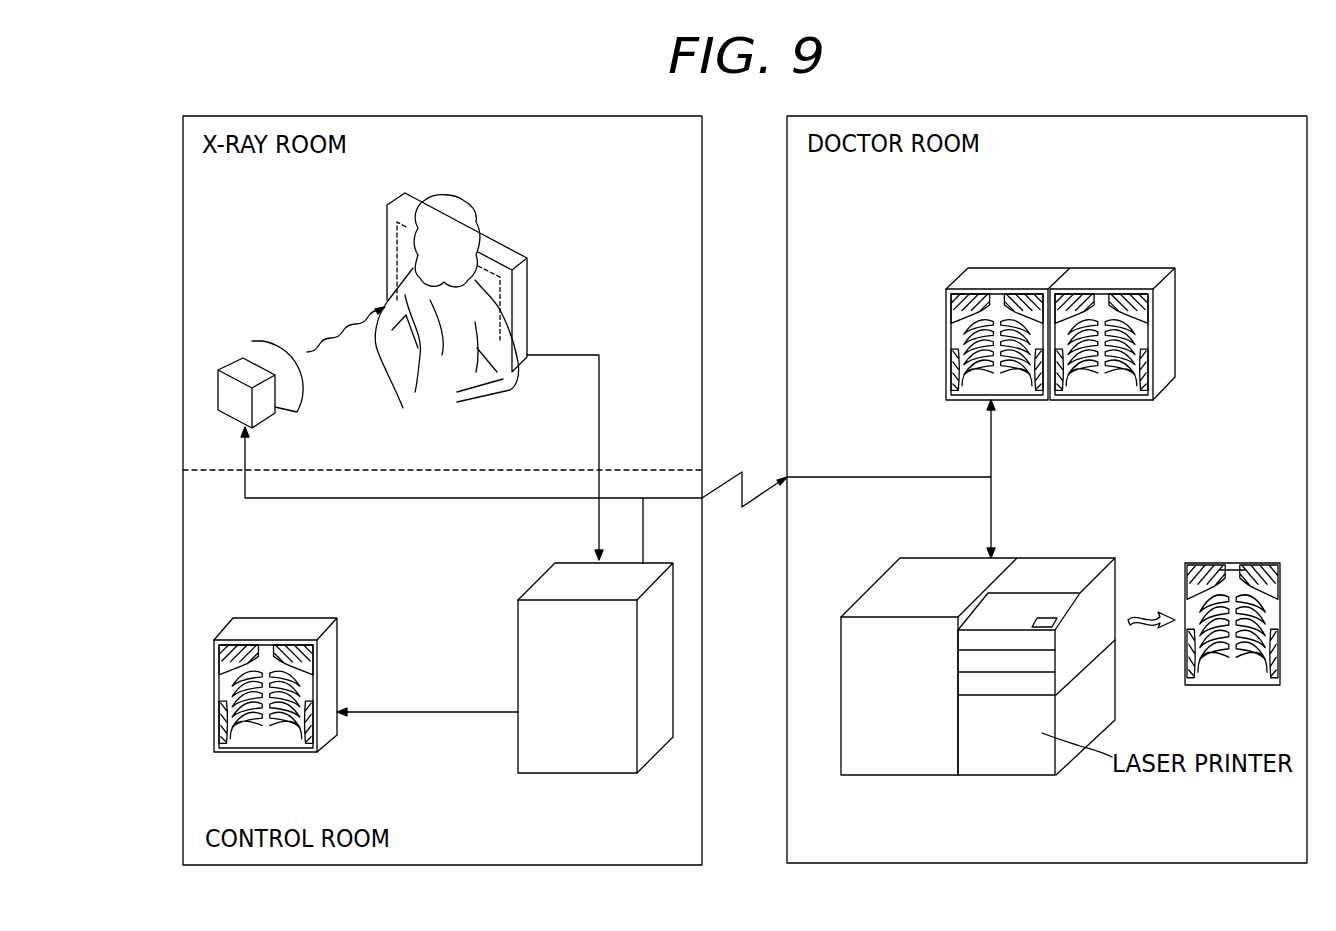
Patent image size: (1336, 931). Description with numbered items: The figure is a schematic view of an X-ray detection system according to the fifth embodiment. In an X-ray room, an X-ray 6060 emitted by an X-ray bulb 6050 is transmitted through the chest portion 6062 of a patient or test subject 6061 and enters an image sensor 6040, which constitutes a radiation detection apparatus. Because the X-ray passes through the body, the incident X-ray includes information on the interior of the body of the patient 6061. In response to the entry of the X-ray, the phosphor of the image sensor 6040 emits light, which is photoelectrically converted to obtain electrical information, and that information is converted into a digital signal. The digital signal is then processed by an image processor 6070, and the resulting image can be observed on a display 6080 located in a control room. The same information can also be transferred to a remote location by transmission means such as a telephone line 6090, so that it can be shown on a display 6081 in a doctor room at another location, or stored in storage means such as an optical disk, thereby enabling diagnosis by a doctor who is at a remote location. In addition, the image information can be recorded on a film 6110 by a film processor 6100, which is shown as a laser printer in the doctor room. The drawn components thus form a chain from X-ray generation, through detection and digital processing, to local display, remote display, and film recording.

The image sensor 6040 is at (527, 284).
The X-ray bulb 6050 is at (240, 358).
The X-ray 6060 is at (337, 324).
The patient 6061 is at (467, 208).
The chest of patient 6062 is at (442, 355).
The image processor 6070 is at (548, 763).
The display 6080 is at (275, 623).
The display 6081 is at (1012, 267).
The telephone line 6090 is at (737, 471).
The film processor 6100 is at (865, 763).
The film 6110 is at (1238, 563).